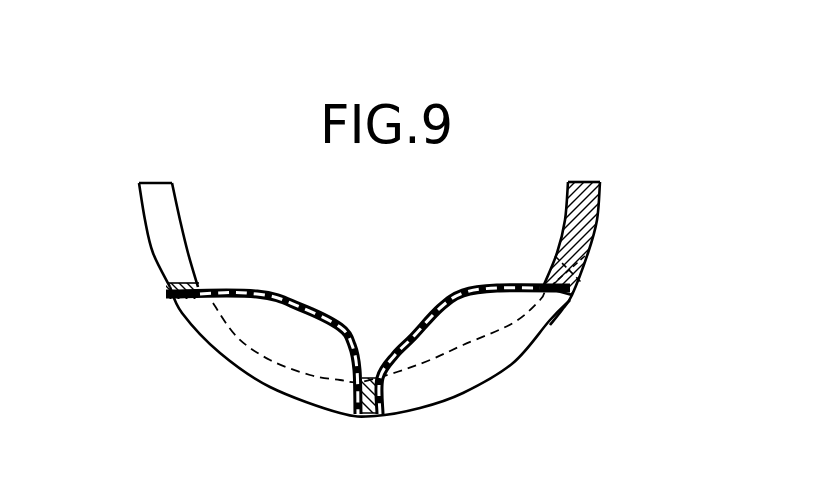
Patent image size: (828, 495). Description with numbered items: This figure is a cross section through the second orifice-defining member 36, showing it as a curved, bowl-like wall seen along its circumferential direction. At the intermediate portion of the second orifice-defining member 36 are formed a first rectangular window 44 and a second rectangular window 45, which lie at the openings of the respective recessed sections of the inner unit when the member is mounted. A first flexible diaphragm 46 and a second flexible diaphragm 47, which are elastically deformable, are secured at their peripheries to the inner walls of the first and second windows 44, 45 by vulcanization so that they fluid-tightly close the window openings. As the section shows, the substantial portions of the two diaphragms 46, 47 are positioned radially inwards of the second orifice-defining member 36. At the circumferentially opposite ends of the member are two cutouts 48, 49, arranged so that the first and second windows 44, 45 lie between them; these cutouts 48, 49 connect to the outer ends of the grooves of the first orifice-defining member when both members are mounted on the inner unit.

The second orifice-defining member 36 is at (618, 208).
The first rectangular window 44 is at (181, 314).
The second rectangular window 45 is at (549, 298).
The first flexible diaphragm 46 is at (277, 289).
The second flexible diaphragm 47 is at (446, 300).
The cutout 48 is at (175, 286).
The cutout 49 is at (560, 257).